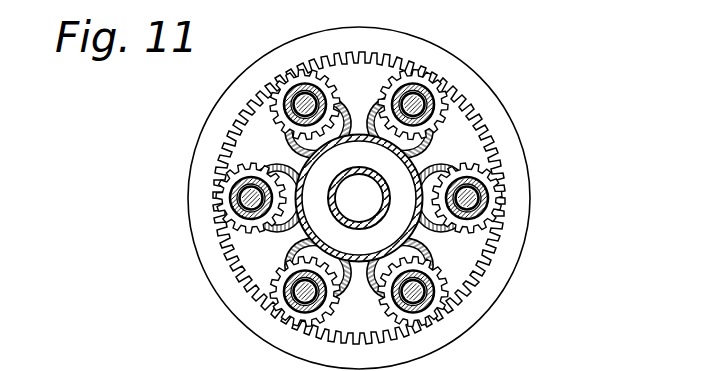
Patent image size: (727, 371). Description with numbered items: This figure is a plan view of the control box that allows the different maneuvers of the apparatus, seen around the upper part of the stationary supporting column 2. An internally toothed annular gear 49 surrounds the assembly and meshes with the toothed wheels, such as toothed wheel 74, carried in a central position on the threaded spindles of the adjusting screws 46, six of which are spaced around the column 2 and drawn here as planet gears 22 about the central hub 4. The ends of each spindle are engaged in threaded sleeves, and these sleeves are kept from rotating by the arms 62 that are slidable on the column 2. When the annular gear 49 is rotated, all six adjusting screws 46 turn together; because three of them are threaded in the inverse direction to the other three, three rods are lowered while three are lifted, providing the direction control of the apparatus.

The upper part of the stationary tube or supporting column 2 is at (290, 165).
The central hub / sun shaft 4 is at (361, 171).
The planet gear 22 is at (290, 95).
The adjusting screw 46 is at (247, 205).
The internally toothed annular gear 49 is at (220, 160).
The arm 62 is at (280, 232).
The toothed wheel 74 is at (505, 162).